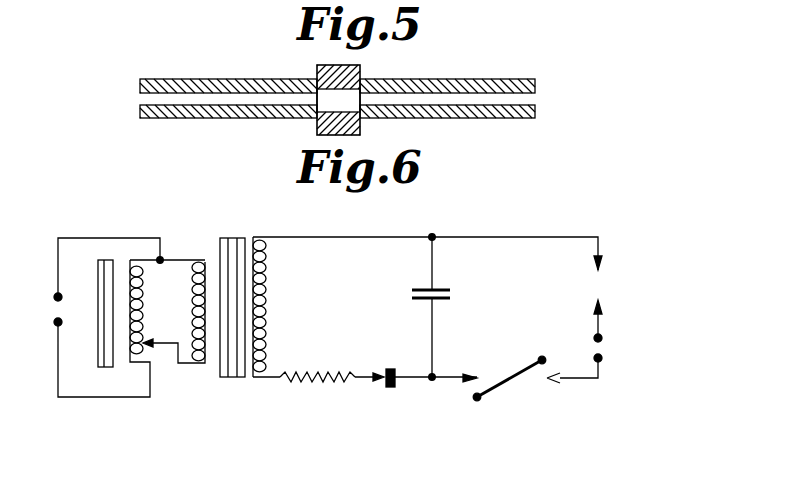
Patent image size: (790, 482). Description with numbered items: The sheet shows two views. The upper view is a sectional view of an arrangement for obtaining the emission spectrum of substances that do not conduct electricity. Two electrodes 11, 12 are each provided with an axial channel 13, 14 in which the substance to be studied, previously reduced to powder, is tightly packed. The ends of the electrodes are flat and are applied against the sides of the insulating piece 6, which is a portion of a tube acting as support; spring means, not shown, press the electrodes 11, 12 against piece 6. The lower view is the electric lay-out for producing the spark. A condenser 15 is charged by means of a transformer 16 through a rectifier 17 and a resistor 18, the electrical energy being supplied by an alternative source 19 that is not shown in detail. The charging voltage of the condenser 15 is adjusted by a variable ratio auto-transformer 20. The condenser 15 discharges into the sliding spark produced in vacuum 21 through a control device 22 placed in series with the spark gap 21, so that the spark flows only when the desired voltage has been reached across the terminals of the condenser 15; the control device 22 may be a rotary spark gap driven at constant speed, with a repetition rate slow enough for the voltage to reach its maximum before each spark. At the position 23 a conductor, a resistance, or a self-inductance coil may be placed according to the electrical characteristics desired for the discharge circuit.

In FIG. 5, the insulating piece 6 is at (360, 73).
In FIG. 5, the electrode 11 is at (207, 108).
In FIG. 5, the electrode 12 is at (483, 122).
In FIG. 5, the axial channel 13 is at (148, 98).
In FIG. 5, the axial channel 14 is at (532, 100).
In FIG. 6, the condenser 15 is at (436, 289).
In FIG. 6, the transformer 16 is at (233, 245).
In FIG. 6, the rectifier 17 is at (373, 372).
In FIG. 6, the resistor 18 is at (335, 376).
In FIG. 6, the alternative source 19 is at (56, 308).
In FIG. 6, the variable ratio auto-transformer 20 is at (102, 283).
In FIG. 6, the sliding spark in vacuum 21 is at (602, 288).
In FIG. 6, the control device 22 is at (515, 382).
In FIG. 6, the circuit element position 23 is at (601, 349).